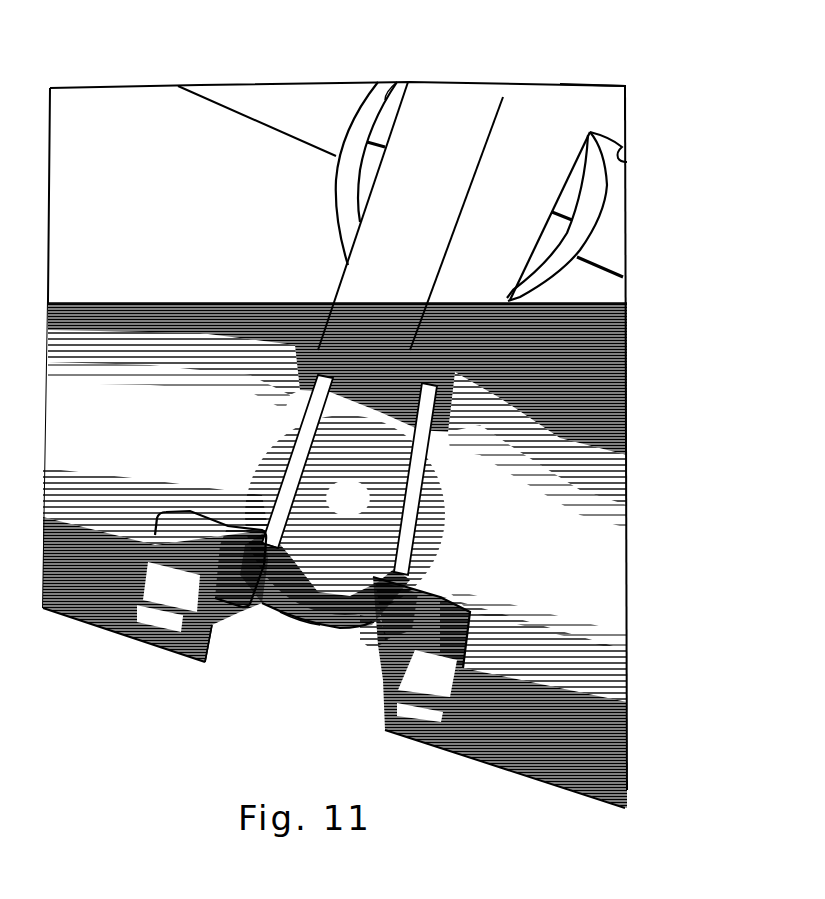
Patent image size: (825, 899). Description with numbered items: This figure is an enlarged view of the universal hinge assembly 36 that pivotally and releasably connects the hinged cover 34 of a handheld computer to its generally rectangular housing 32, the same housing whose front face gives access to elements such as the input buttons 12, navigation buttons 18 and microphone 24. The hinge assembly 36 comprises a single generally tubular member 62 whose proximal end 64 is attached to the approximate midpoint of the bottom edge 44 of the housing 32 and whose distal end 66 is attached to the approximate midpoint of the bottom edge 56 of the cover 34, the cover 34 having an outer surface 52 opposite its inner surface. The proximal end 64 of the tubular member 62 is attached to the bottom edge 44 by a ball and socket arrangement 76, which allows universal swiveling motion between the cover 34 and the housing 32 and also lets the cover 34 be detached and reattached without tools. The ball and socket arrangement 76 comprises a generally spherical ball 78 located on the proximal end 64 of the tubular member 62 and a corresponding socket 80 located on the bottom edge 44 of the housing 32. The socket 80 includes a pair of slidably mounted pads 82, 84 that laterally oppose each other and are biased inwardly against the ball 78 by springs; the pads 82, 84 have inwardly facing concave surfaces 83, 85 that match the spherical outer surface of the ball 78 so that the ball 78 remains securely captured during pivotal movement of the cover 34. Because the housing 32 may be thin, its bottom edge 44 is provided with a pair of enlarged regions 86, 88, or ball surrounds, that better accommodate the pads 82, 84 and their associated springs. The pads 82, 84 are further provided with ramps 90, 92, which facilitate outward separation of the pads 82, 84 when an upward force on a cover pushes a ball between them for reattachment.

The input buttons 12 is at (300, 107).
The navigation buttons 18 is at (550, 217).
The microphone 24 is at (620, 318).
The housing 32 is at (627, 393).
The hinged cover 34 is at (608, 82).
The universal hinge assembly 36 is at (252, 710).
The bottom edge 44 is at (627, 757).
The outer surface 52 is at (612, 100).
The bottom edge 56 is at (627, 160).
The tubular member 62 is at (345, 265).
The proximal end 64 is at (272, 352).
The distal end 66 is at (400, 108).
The ball and socket arrangement 76 is at (303, 655).
The ball 78 is at (297, 607).
The socket 80 is at (340, 642).
The pad 82 is at (283, 447).
The concave surface 83 is at (272, 487).
The pad 84 is at (422, 487).
The concave surface 85 is at (393, 533).
The enlarged region 86 is at (157, 430).
The enlarged region 88 is at (587, 588).
The ramp 90 is at (240, 612).
The ramp 92 is at (370, 652).